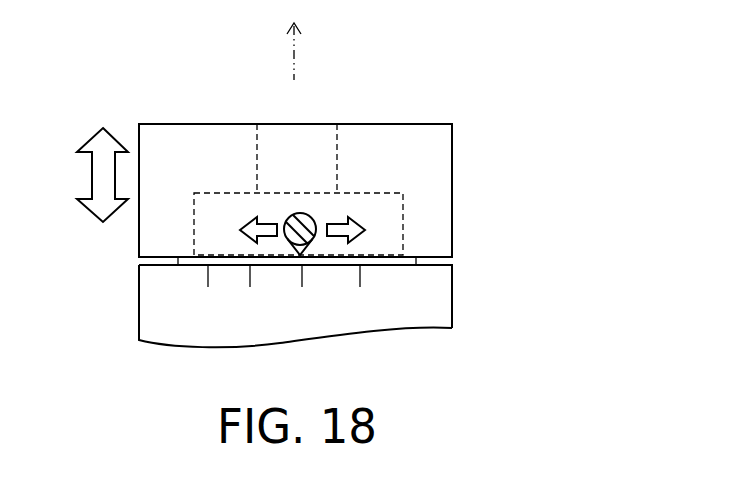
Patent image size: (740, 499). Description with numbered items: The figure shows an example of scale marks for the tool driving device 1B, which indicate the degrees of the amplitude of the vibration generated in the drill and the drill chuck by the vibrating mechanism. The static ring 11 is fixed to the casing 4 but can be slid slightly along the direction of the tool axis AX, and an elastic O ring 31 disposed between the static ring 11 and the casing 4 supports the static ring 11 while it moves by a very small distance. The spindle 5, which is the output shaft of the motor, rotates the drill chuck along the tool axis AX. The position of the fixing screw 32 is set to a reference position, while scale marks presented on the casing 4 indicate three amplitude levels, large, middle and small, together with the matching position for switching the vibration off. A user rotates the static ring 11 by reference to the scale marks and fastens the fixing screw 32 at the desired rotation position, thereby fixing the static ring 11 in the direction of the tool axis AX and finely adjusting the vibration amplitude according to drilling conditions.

The tool driving device 1B is at (457, 158).
The static ring 11 is at (452, 199).
The O ring 31 is at (178, 261).
The fixing screw 32 is at (302, 213).
The casing 4 is at (452, 298).
The spindle 5 is at (337, 150).
The tool axis AX is at (293, 60).